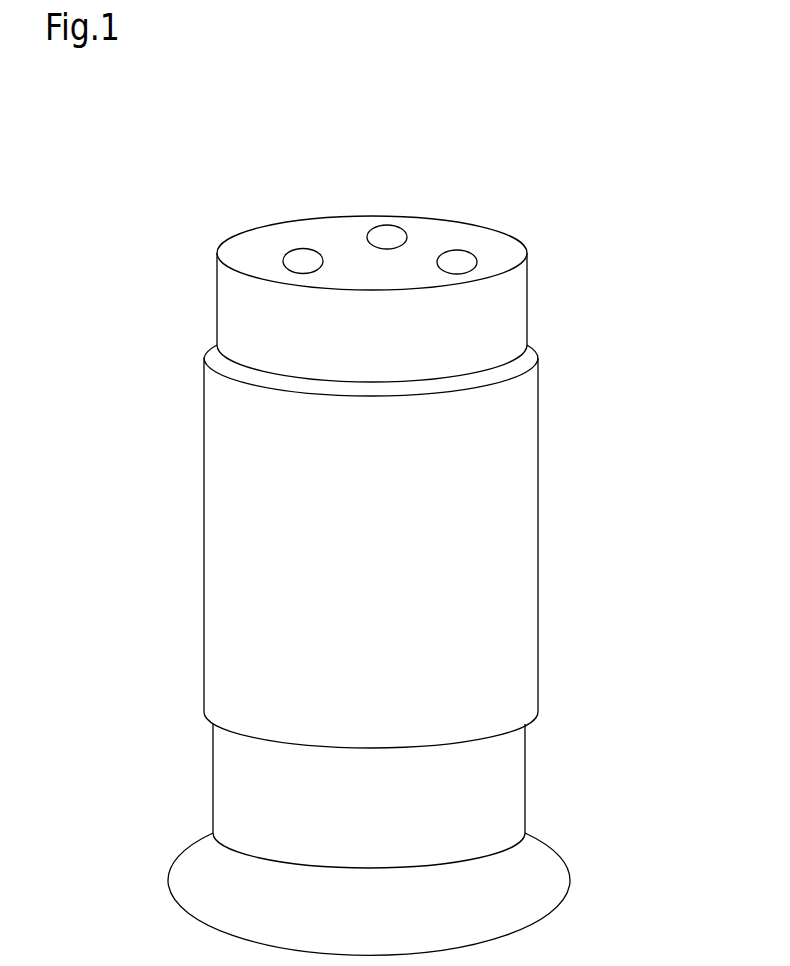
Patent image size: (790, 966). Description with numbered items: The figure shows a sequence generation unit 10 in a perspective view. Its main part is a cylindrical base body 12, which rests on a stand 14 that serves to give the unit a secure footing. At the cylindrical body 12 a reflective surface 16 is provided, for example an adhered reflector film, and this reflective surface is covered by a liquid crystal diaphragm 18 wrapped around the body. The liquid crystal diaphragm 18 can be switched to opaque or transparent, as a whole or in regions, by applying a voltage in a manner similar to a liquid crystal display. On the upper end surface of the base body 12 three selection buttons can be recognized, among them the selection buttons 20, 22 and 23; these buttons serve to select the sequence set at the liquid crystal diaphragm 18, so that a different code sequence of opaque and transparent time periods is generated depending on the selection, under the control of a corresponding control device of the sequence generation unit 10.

The sequence generation unit 10 is at (613, 150).
The cylindrical base body 12 is at (503, 762).
The stand 14 is at (548, 873).
The reflective surface 16 is at (515, 370).
The liquid crystal diaphragm 18 is at (510, 502).
The selection button 20 is at (307, 258).
The selection button 22 is at (393, 235).
The third opening 23 is at (460, 258).